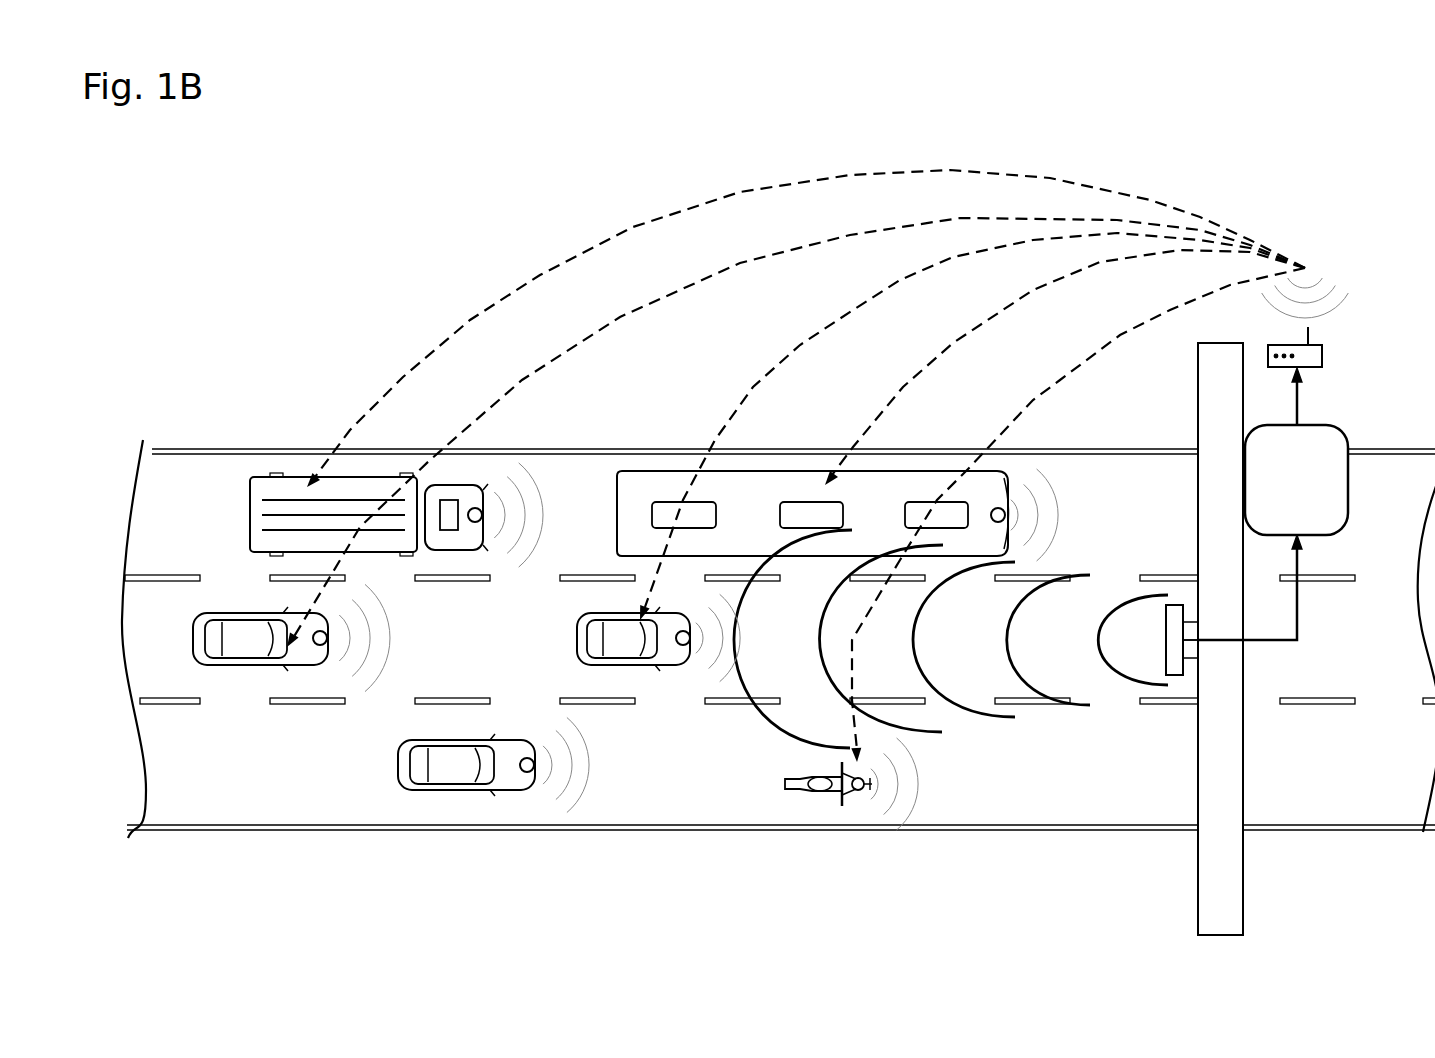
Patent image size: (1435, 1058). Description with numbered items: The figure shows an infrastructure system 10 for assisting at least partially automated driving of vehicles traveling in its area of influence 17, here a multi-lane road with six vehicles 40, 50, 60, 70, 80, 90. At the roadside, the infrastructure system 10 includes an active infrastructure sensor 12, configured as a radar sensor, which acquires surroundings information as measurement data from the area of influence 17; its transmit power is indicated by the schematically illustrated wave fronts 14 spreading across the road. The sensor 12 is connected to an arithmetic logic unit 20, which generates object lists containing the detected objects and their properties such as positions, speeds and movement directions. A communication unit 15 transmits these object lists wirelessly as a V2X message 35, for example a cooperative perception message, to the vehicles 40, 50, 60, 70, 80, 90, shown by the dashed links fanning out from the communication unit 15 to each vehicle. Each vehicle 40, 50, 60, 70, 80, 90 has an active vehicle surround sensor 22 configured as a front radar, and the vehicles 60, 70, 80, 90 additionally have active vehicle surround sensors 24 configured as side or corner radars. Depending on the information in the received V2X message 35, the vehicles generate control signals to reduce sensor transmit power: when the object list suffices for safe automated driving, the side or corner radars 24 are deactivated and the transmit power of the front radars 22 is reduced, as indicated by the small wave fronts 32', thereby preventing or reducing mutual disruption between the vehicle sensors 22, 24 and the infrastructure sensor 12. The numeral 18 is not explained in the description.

The infrastructure system 10 is at (1335, 178).
The active infrastructure sensor 12 is at (1175, 676).
The wave fronts 14 is at (1060, 673).
The communication unit 15 is at (1322, 356).
The area of influence 17 is at (157, 505).
The mast 18 is at (1200, 775).
The arithmetic logic unit 20 is at (1332, 425).
The active vehicle surround sensor 22 is at (478, 512).
The additional active vehicle surround sensor 24 is at (468, 490).
The wave fronts 32' is at (721, 634).
The V2X message 35 is at (705, 277).
The vehicle 40 is at (822, 797).
The vehicle 50 is at (932, 471).
The vehicle 60 is at (668, 660).
The vehicle 70 is at (480, 793).
The vehicle 80 is at (243, 665).
The vehicle 90 is at (248, 503).